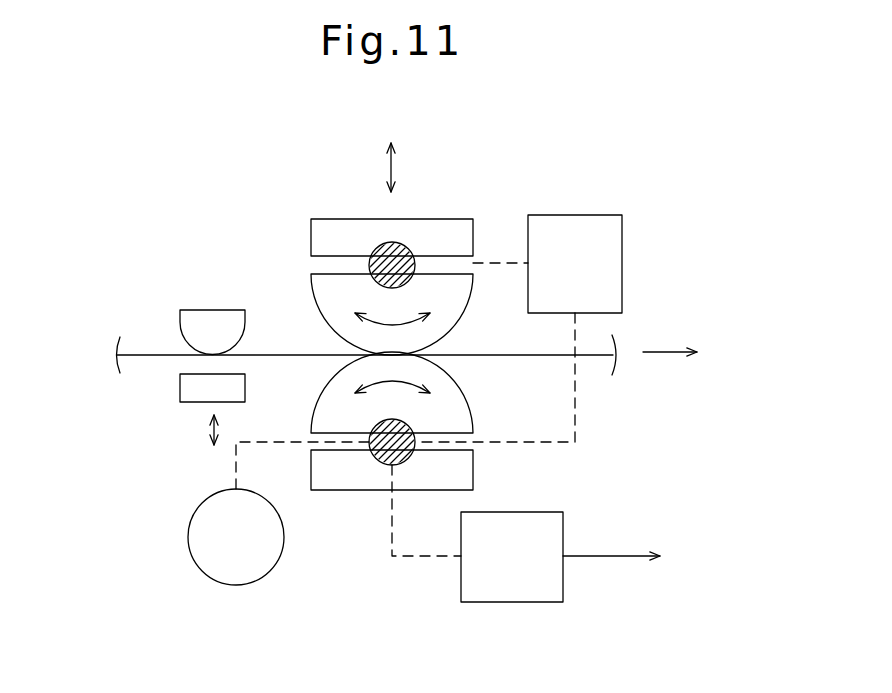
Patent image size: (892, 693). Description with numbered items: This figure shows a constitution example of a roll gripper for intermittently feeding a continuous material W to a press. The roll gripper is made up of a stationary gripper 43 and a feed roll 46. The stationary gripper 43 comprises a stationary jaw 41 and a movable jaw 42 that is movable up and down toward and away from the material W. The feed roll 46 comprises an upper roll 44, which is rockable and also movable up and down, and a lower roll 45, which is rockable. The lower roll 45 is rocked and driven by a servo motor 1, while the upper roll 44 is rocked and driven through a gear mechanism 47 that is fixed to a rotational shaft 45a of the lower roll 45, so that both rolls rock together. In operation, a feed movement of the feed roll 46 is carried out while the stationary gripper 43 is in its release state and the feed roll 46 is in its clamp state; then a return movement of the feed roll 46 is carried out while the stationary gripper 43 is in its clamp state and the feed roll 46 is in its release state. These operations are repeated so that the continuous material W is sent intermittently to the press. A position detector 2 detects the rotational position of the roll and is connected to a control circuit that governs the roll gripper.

The servo motor 1 is at (188, 541).
The position detector 2 is at (565, 535).
The stationary jaw 41 is at (180, 327).
The movable jaw 42 is at (185, 402).
The stationary gripper 43 is at (158, 372).
The upper roll 44 is at (304, 266).
The lower roll 45 is at (352, 497).
The rotational shaft 45a is at (408, 459).
The feed roll 46 is at (308, 328).
The gear mechanism 47 is at (622, 259).
The continuous material W is at (590, 355).